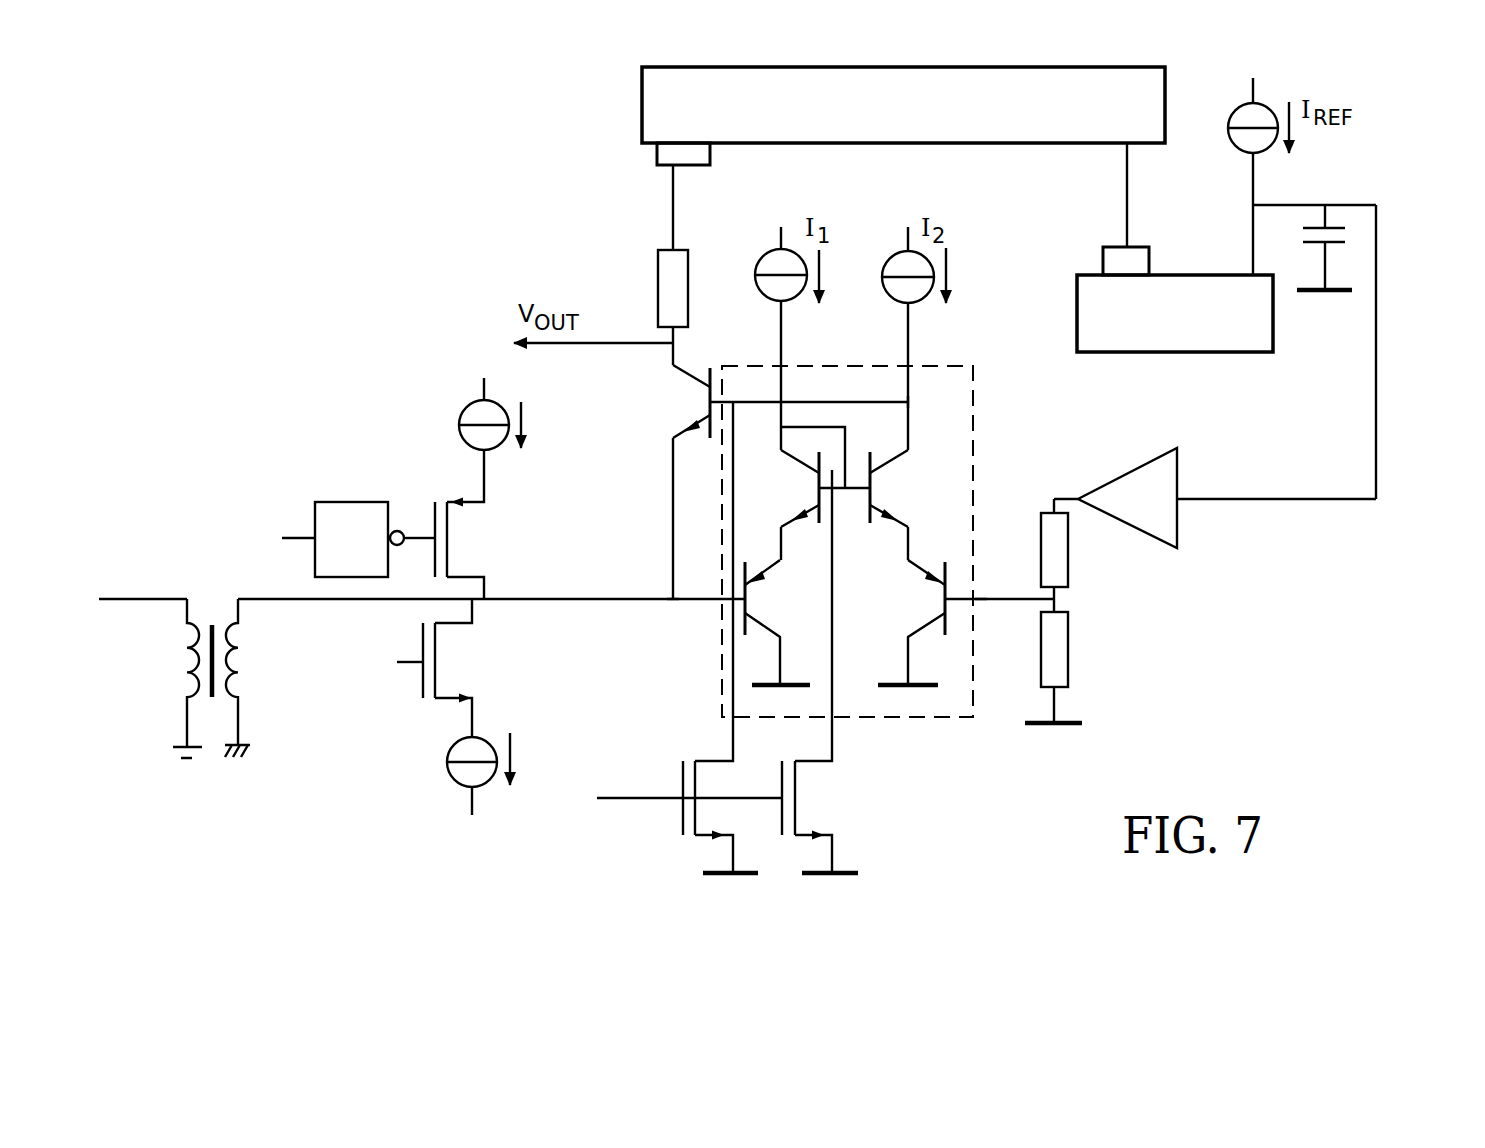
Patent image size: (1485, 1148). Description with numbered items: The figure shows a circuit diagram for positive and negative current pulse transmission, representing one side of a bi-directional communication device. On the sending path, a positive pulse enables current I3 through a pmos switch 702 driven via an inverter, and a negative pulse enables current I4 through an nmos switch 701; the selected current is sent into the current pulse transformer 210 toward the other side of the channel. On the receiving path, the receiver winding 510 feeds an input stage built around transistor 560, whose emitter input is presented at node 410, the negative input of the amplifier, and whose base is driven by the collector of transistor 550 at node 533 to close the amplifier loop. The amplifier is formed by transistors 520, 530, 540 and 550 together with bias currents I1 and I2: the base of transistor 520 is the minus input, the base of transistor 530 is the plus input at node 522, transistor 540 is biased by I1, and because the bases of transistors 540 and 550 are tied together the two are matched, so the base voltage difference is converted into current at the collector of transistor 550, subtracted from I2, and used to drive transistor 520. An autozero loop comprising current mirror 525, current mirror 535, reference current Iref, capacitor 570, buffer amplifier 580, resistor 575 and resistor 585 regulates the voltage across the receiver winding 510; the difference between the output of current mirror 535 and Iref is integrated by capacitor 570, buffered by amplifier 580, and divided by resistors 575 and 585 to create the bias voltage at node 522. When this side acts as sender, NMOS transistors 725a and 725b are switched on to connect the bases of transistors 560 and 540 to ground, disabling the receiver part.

The current pulse transformer 210 is at (205, 587).
The nmos switch 701 is at (405, 678).
The pmos switch 702 is at (422, 503).
The node 410 is at (697, 620).
The current pulse transformer receiver winding 510 is at (928, 718).
The transistor 520 is at (777, 622).
The node 522 is at (981, 620).
The current mirror 525 is at (883, 118).
The transistor 530 is at (911, 622).
The node 533 is at (937, 411).
The current mirror 535 is at (1154, 324).
The transistor 540 is at (812, 493).
The transistor 550 is at (898, 505).
The transistor 560 is at (776, 482).
The capacitor 570 is at (1338, 228).
The resistor 575 is at (1068, 548).
The buffer amplifier 580 is at (1119, 514).
The resistor 585 is at (1068, 645).
The NMOS transistor 725a is at (668, 813).
The NMOS transistor 725b is at (772, 818).